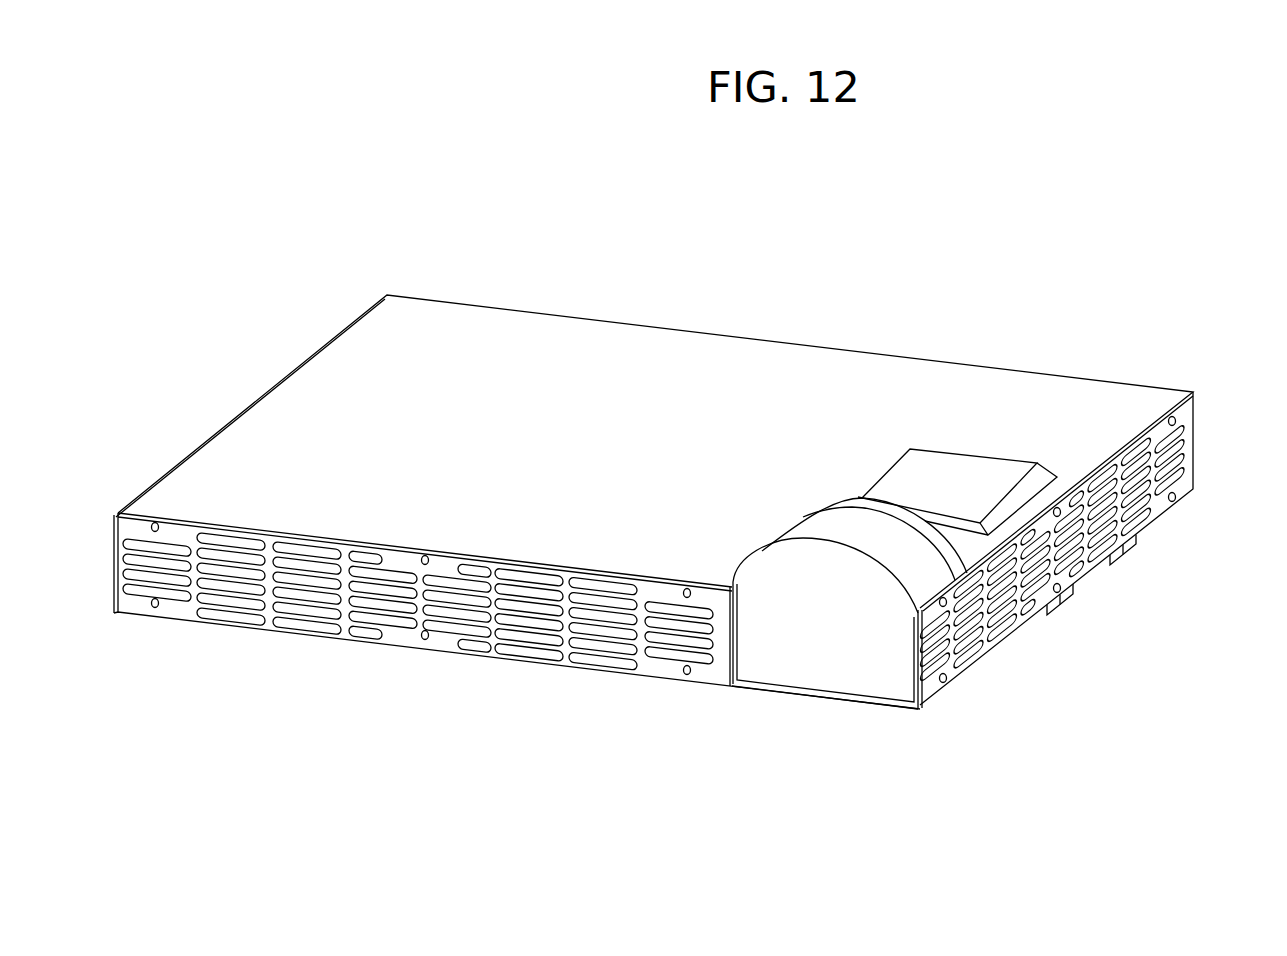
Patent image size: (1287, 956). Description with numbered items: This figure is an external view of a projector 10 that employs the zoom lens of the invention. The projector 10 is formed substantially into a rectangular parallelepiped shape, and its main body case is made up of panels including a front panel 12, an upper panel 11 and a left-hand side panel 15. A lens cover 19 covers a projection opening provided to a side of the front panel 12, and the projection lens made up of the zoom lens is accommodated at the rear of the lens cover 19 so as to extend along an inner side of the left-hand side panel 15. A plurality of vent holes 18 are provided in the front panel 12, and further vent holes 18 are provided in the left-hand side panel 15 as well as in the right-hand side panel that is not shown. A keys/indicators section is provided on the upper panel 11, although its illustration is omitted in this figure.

The projector 10 is at (678, 487).
The upper panel 11 is at (463, 322).
The front panel 12 is at (405, 633).
The left-hand side panel 15 is at (1157, 522).
The vent holes 18 is at (312, 608).
The lens cover 19 is at (820, 672).